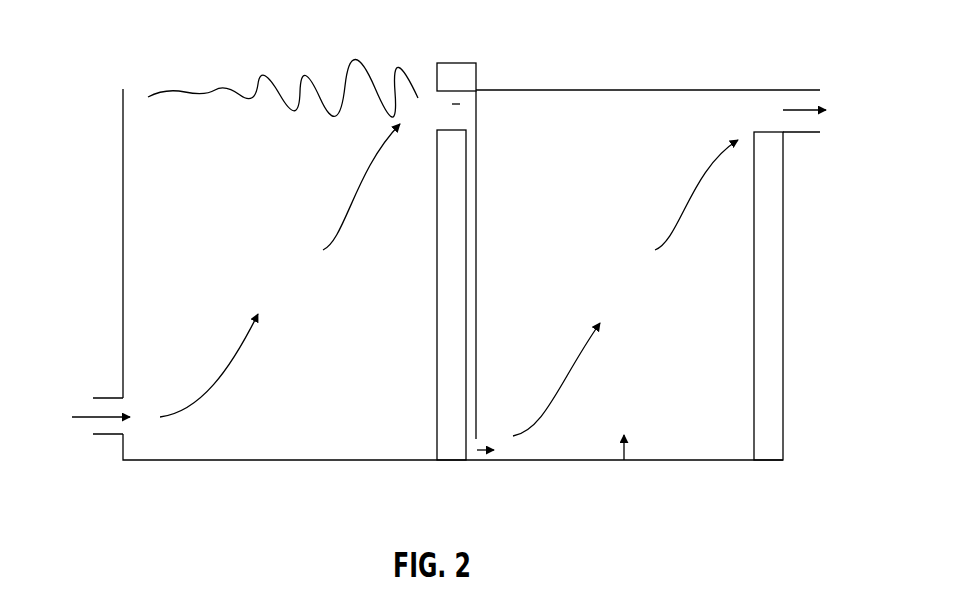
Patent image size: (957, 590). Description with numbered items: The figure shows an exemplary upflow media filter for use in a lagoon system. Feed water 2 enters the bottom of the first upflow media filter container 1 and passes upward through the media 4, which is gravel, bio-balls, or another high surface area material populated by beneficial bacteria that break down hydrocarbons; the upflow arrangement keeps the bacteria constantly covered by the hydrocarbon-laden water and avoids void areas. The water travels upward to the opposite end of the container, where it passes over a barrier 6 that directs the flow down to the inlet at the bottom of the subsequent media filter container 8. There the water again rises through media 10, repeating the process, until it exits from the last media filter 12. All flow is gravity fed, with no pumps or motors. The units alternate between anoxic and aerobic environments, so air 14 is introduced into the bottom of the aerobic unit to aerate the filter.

The first upflow media filter container 1 is at (123, 232).
The feed water 2 is at (82, 415).
The media 4 is at (303, 297).
The barrier 6 is at (469, 118).
The inlet at the bottom of the subsequent media filter container 8 is at (478, 453).
The media of subsequent media filter 10 is at (640, 297).
The exit from the last media filter 12 is at (800, 108).
The air introduction 14 is at (645, 413).